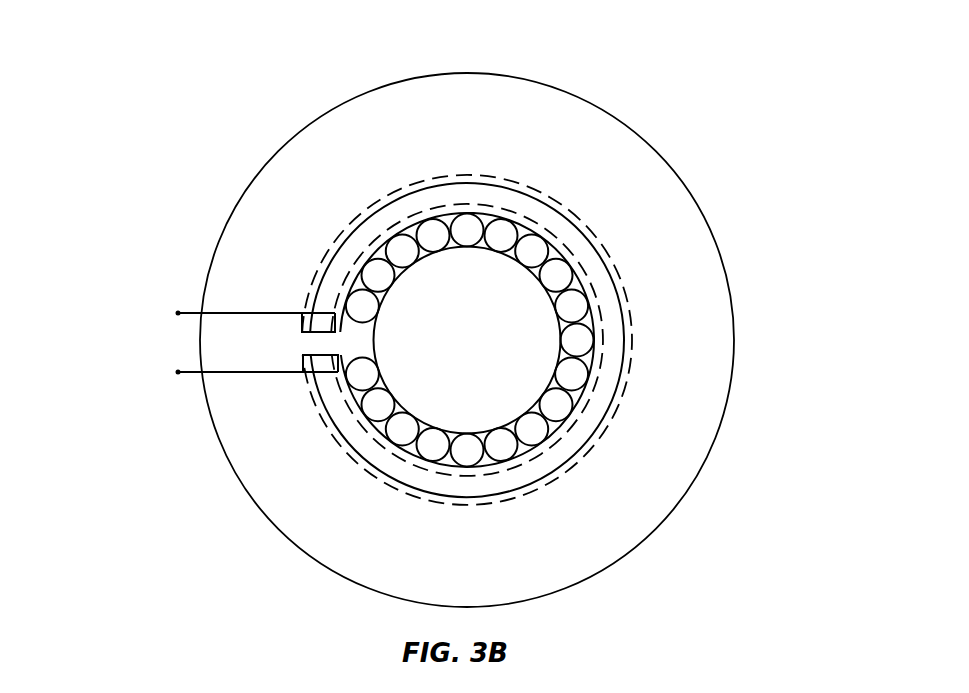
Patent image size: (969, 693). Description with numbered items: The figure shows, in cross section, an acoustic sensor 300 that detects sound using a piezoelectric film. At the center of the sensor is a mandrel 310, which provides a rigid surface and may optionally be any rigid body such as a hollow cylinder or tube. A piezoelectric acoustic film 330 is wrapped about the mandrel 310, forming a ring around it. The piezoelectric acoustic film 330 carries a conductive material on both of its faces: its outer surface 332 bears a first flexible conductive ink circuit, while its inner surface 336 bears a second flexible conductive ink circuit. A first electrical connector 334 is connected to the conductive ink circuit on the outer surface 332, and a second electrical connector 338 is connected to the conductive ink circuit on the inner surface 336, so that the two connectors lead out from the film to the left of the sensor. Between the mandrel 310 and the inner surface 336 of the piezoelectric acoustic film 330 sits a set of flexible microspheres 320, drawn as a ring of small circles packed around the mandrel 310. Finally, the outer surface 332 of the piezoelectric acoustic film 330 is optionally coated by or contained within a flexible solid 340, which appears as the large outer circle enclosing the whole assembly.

The acoustic sensor 300 is at (140, 80).
The mandrel 310 is at (533, 272).
The flexible microspheres 320 is at (505, 468).
The piezoelectric acoustic film 330 is at (579, 223).
The outer surface 332 is at (546, 190).
The first electrical connector 334 is at (220, 372).
The inner surface 336 is at (590, 279).
The second electrical connector 338 is at (220, 313).
The flexible solid 340 is at (584, 100).